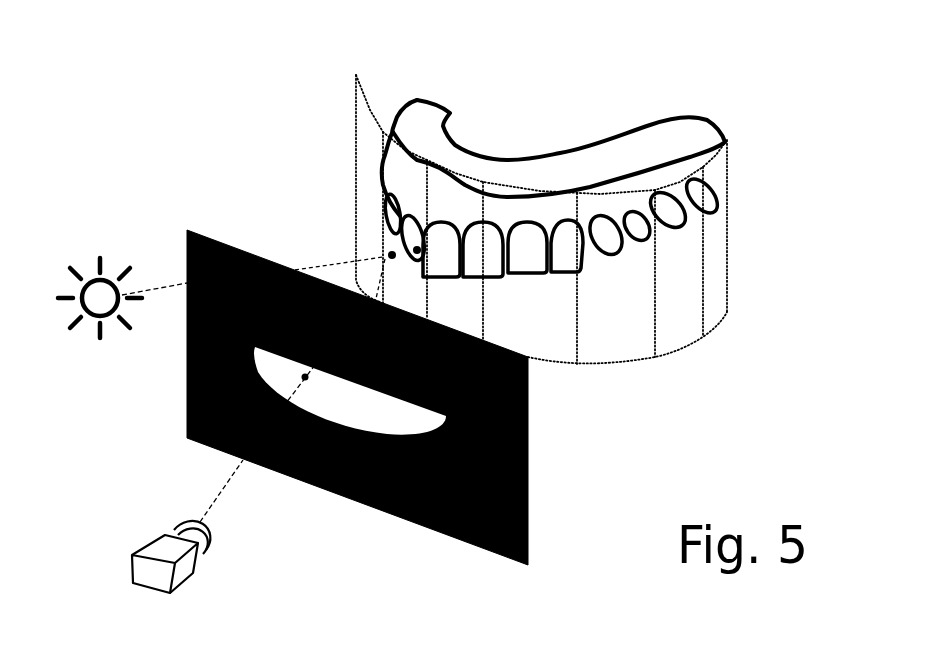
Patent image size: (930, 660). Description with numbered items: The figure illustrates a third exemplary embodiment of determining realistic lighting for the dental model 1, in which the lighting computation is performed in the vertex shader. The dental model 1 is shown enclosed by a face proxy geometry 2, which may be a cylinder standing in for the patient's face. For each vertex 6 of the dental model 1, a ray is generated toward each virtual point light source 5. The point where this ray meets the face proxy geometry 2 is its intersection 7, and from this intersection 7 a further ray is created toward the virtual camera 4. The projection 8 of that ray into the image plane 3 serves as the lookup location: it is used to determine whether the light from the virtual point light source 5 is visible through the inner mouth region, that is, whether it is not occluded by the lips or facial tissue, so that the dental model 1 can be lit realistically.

The dental model 1 is at (620, 134).
The face proxy geometry 2 is at (716, 334).
The image plane 3 is at (180, 427).
The virtual camera 4 is at (192, 578).
The virtual point light source 5 is at (86, 262).
The vertex 6 is at (410, 248).
The intersection 7 is at (384, 253).
The projection 8 is at (312, 381).